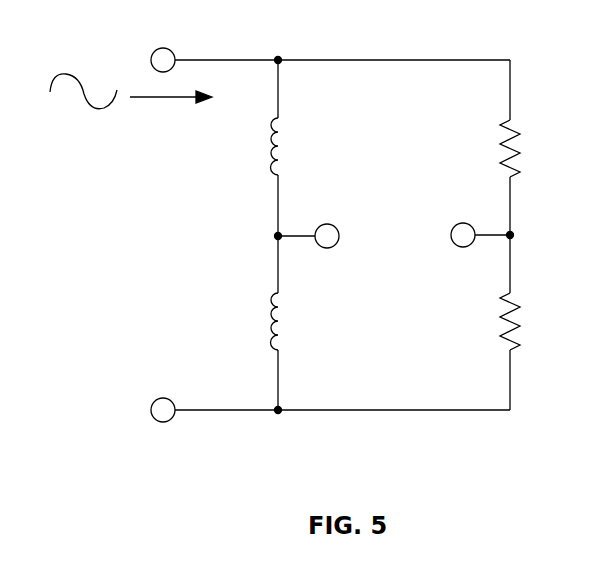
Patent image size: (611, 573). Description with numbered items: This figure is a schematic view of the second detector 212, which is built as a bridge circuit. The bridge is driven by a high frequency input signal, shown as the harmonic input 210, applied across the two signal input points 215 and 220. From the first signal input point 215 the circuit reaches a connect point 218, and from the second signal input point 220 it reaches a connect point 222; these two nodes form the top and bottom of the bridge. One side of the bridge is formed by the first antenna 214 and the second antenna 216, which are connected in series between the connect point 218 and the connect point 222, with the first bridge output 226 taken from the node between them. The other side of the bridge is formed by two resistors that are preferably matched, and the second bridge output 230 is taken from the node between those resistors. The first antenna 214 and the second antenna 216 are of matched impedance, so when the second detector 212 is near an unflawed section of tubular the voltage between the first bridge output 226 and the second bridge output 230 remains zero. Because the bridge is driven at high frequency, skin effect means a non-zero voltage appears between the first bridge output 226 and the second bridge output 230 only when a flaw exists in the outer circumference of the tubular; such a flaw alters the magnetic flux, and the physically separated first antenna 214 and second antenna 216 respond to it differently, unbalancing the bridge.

The harmonic input 210 is at (100, 110).
The second detector 212 is at (524, 421).
The first antenna 214 is at (280, 150).
The signal input point 215 is at (152, 54).
The second antenna 216 is at (282, 325).
The connect point 218 is at (276, 58).
The signal input point 220 is at (152, 400).
The connect point 222 is at (276, 414).
The first bridge output 226 is at (331, 223).
The second bridge output 230 is at (458, 248).